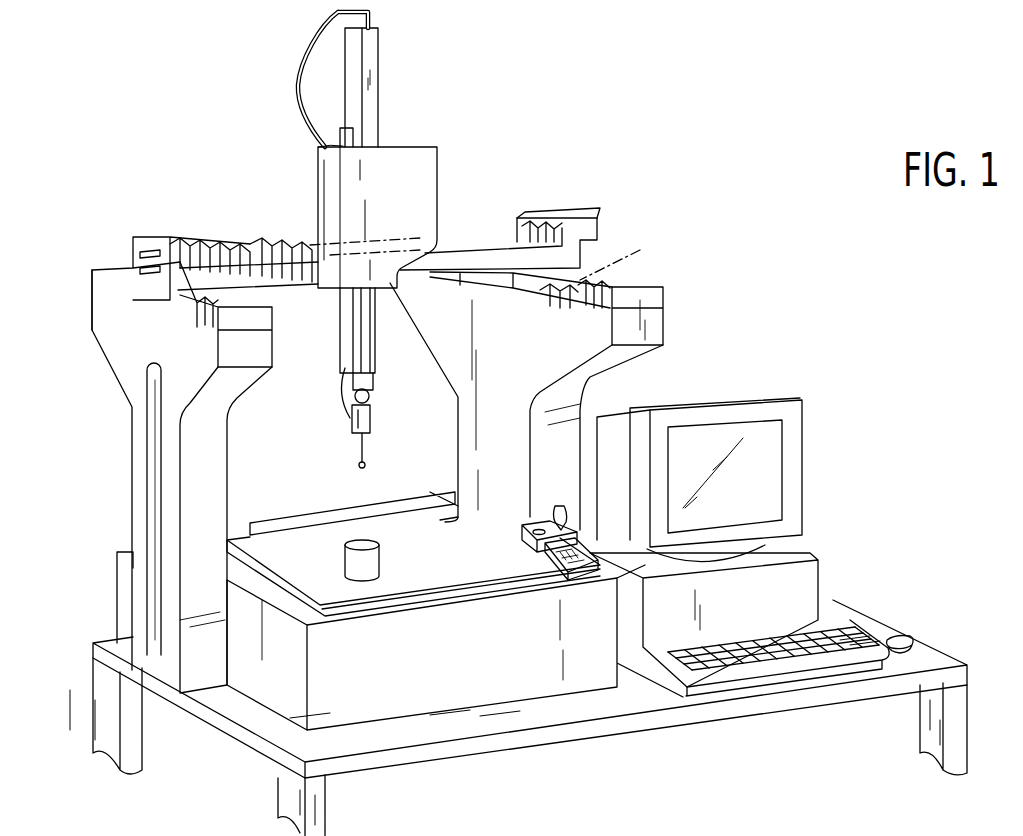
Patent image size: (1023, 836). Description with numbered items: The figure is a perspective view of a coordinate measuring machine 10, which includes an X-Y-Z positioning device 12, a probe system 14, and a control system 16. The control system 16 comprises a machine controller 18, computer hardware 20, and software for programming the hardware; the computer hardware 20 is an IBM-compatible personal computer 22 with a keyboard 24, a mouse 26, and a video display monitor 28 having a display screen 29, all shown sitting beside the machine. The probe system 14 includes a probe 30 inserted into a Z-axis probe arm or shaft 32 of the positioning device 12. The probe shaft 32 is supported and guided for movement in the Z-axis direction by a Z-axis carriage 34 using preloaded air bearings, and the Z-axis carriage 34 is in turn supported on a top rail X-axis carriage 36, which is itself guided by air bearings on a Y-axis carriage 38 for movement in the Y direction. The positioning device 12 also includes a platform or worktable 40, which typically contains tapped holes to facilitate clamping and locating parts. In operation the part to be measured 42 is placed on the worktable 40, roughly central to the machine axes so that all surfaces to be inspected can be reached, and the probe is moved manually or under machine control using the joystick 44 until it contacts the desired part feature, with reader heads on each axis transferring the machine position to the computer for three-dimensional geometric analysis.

The coordinate measuring machine 10 is at (778, 158).
The X-Y-Z positioning device 12 is at (115, 212).
The probe system 14 is at (328, 393).
The control system 16 is at (748, 336).
The machine controller 18 is at (266, 518).
The computer hardware 20 is at (818, 493).
The personal computer 22 is at (818, 572).
The keyboard 24 is at (830, 638).
The mouse 26 is at (902, 634).
The video display monitor 28 is at (797, 435).
The display screen 29 is at (762, 430).
The probe 30 is at (352, 425).
The Z-axis probe arm or shaft 32 is at (378, 60).
The Z-axis carriage 34 is at (425, 177).
The X-axis carriage 36 is at (268, 270).
The Y-axis carriage 38 is at (561, 297).
The worktable 40 is at (355, 610).
The part to be measured 42 is at (380, 566).
The joystick 44 is at (560, 506).